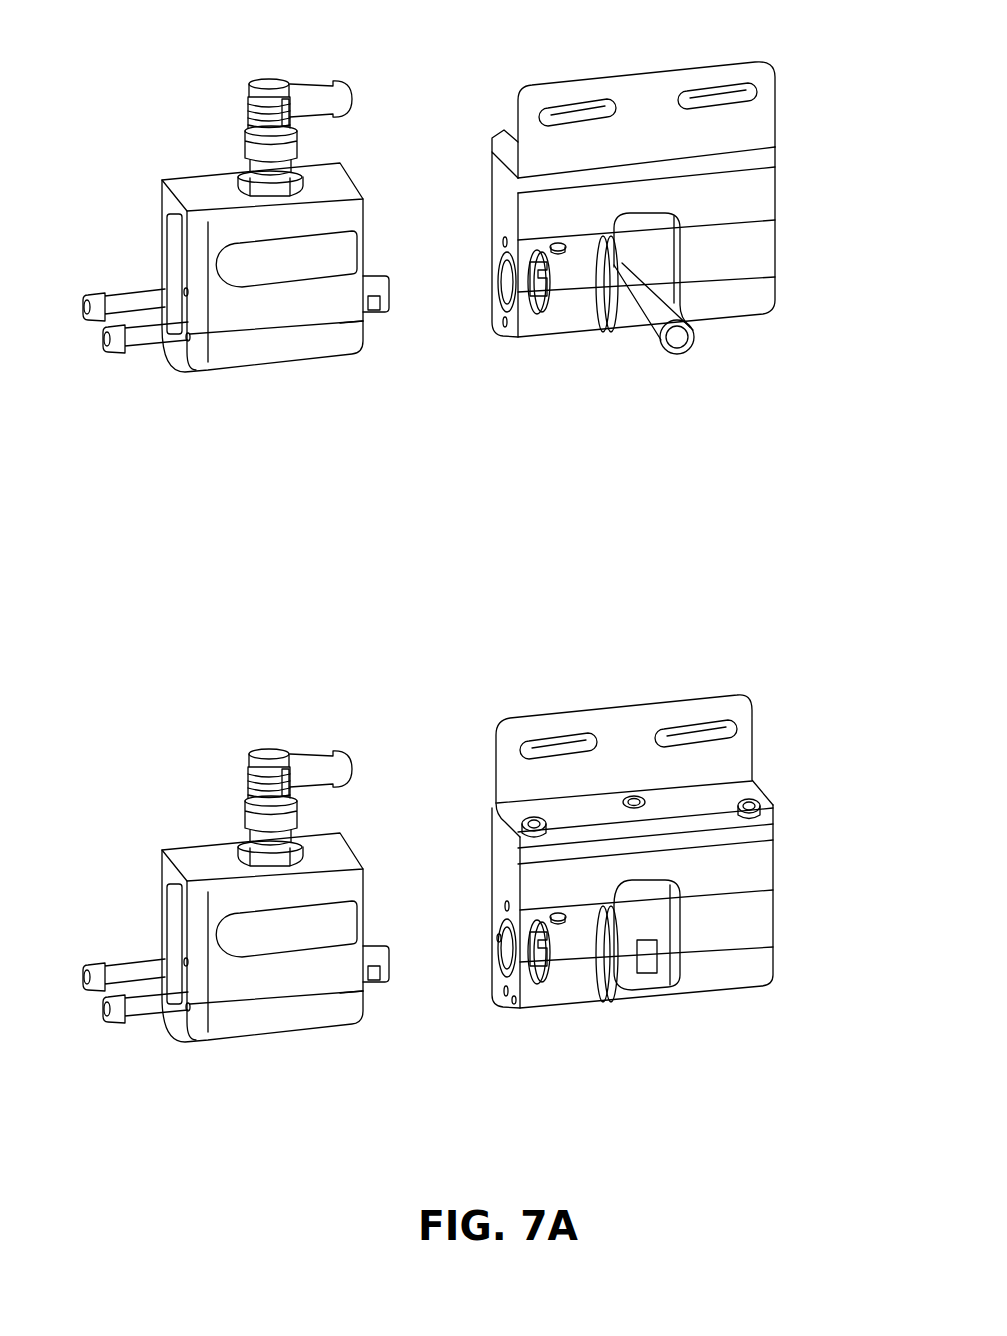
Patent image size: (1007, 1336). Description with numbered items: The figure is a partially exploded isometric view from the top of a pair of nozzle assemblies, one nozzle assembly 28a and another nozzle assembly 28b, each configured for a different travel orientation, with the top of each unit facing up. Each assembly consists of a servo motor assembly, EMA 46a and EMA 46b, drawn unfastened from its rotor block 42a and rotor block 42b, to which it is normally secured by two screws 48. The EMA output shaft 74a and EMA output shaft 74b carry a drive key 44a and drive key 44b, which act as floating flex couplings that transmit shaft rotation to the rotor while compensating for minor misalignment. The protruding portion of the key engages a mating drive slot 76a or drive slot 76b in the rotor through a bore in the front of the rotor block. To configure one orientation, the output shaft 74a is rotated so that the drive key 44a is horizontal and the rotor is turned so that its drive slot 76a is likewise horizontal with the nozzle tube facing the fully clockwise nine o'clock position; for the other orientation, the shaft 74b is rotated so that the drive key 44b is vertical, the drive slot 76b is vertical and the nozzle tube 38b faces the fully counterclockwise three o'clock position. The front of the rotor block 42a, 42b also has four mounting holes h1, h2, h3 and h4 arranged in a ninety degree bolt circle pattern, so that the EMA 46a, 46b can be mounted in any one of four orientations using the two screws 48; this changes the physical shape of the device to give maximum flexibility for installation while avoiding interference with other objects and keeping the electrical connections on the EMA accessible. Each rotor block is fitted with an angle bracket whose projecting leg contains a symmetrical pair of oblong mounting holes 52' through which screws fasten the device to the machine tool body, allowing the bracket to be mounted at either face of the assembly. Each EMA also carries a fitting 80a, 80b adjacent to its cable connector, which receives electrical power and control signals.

The nozzle assembly 28a is at (782, 1074).
The nozzle assembly 28b is at (782, 404).
The nozzle tube 38b is at (693, 337).
The rotor block 42a is at (580, 987).
The rotor block 42b is at (587, 313).
The drive key 44a is at (402, 949).
The drive key 44b is at (387, 278).
The EMA 46a is at (259, 918).
The EMA 46b is at (218, 172).
The screws 48 is at (135, 1017).
The oblong mounting holes 52' is at (633, 117).
The EMA output shaft 74a is at (387, 1014).
The EMA output shaft 74b is at (370, 318).
The drive slot 76a is at (543, 1000).
The drive slot 76b is at (530, 320).
The fitting nut 80a is at (308, 829).
The fitting nut 80b is at (293, 148).
The mounting hole h1 is at (506, 994).
The mounting hole h2 is at (515, 1004).
The mounting hole h3 is at (497, 937).
The mounting hole h4 is at (505, 908).